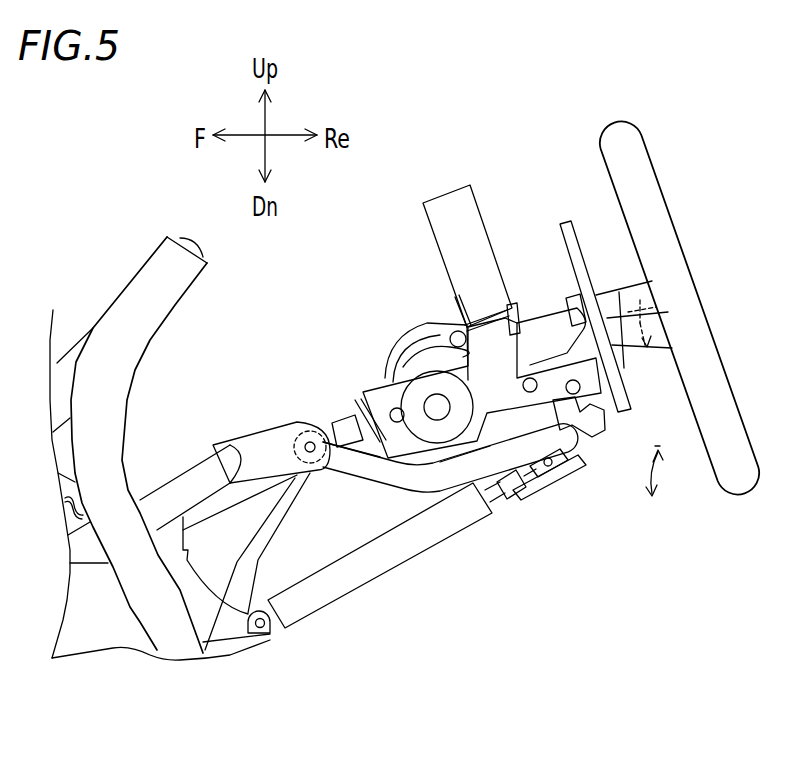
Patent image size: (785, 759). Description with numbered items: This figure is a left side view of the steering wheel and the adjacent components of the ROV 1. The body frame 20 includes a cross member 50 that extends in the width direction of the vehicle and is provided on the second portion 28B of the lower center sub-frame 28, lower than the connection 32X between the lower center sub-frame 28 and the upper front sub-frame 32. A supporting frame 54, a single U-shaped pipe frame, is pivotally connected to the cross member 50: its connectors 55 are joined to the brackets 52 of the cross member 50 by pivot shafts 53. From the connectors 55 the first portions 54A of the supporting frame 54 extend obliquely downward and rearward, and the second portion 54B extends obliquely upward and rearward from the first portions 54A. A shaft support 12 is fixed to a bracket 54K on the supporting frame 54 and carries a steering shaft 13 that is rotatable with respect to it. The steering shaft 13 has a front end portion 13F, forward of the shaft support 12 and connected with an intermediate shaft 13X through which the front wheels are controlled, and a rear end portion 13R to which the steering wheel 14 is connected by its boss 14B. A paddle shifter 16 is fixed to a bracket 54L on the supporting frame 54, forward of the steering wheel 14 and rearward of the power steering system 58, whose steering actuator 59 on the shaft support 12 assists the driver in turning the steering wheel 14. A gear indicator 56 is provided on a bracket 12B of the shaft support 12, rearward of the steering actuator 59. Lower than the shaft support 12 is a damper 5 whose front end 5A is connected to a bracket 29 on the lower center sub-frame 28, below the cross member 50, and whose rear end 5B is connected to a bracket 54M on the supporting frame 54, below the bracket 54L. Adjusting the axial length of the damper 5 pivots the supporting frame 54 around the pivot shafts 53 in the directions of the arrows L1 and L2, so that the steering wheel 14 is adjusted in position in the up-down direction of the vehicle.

The ROV 1 is at (500, 128).
The damper 5 is at (392, 588).
The front end 5A is at (277, 633).
The rear end 5B is at (521, 487).
The shaft support 12 is at (482, 341).
The bracket 12B is at (480, 323).
The steering shaft 13 is at (683, 308).
The front end portion 13F is at (355, 423).
The rear end portion 13R is at (653, 307).
The intermediate shaft 13X is at (242, 570).
The steering wheel 14 is at (650, 157).
The boss 14B is at (653, 318).
The paddle shifter 16 is at (563, 221).
The body frame 20 is at (148, 258).
The lower center sub-frame 28 is at (161, 679).
The second portion 28B is at (147, 617).
The bracket 29 is at (215, 622).
The upper front sub-frame 32 is at (76, 450).
The connection 32X is at (95, 327).
The cross member 50 is at (183, 480).
The brackets 52 is at (260, 430).
The pivot shafts 53 is at (330, 403).
The supporting frame 54 is at (462, 528).
The first portions 54A is at (345, 485).
The second portion 54B is at (468, 478).
The bracket 54K is at (592, 418).
The bracket 54L is at (545, 466).
The bracket 54M is at (563, 463).
The connectors 55 is at (305, 430).
The gear indicator 56 is at (443, 188).
The power steering system 58 is at (417, 443).
The steering actuator 59 is at (417, 357).
The arrow L1 is at (651, 487).
The arrow L2 is at (658, 432).